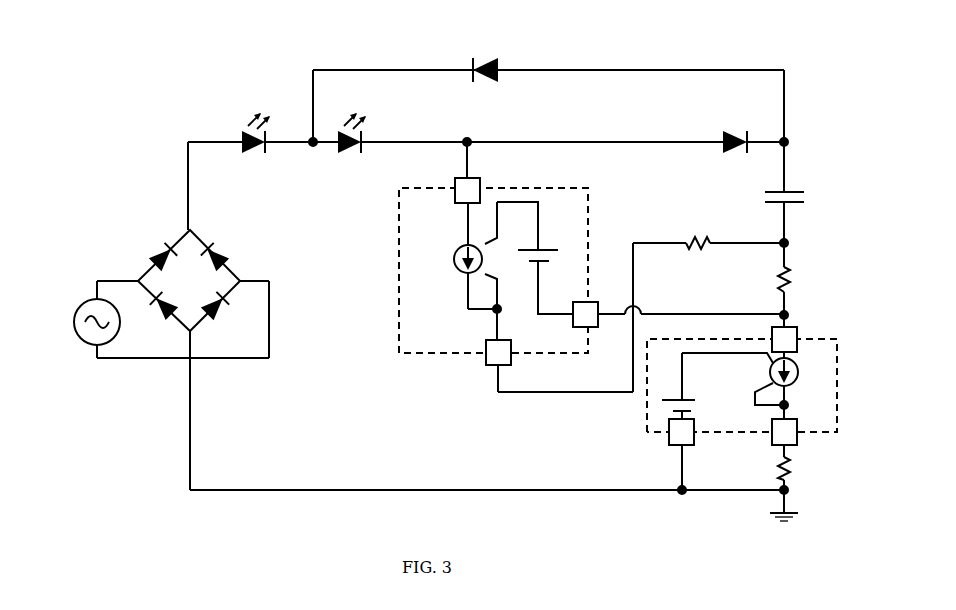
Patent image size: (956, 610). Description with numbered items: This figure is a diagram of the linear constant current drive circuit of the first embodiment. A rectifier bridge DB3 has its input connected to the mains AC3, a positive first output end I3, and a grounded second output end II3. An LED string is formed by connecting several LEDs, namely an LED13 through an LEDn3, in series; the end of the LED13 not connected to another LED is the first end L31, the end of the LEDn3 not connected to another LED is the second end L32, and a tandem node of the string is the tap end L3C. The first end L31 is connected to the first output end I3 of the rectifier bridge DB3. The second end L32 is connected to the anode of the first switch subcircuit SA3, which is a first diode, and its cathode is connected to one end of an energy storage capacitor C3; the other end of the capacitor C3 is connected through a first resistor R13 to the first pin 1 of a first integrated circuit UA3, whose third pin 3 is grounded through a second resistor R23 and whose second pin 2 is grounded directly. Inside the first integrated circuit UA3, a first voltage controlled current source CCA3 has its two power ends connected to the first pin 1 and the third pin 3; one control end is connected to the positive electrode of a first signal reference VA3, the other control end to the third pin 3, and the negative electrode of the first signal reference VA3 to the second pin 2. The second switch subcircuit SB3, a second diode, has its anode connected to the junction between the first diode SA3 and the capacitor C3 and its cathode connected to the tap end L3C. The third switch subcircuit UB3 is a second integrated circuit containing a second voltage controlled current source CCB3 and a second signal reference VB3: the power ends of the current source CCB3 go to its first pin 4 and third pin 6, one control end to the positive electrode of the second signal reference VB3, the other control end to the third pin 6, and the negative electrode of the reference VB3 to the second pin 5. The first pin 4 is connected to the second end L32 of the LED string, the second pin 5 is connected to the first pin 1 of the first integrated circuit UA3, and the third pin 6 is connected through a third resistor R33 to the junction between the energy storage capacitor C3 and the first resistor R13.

The first end L31 is at (215, 176).
The LED LED13 is at (273, 147).
The tap end L3C is at (531, 108).
The LED LEDn3 is at (343, 146).
The second end L32 is at (542, 133).
The second switch subcircuit SB3 is at (485, 85).
The first switch subcircuit SA3 is at (750, 156).
The energy storage capacitor C3 is at (769, 168).
The third resistor R33 is at (708, 302).
The first resistor R13 is at (767, 297).
The rectifier bridge DB3 is at (189, 276).
The first output end I3 is at (216, 209).
The second output end II3 is at (183, 385).
The mains AC3 is at (114, 319).
The third switch subcircuit UB3 is at (395, 325).
The second voltage controlled current source CCB3 is at (454, 257).
The second signal reference VB3 is at (536, 258).
The first integrated circuit UA3 is at (642, 430).
The first voltage controlled current source CCA3 is at (740, 392).
The first signal reference VA3 is at (696, 387).
The second resistor R23 is at (771, 489).
The first pin 1 is at (784, 339).
The second pin 2 is at (681, 456).
The third pin 3 is at (784, 438).
The first pin 4 is at (467, 172).
The second pin 5 is at (678, 314).
The third pin 6 is at (559, 350).